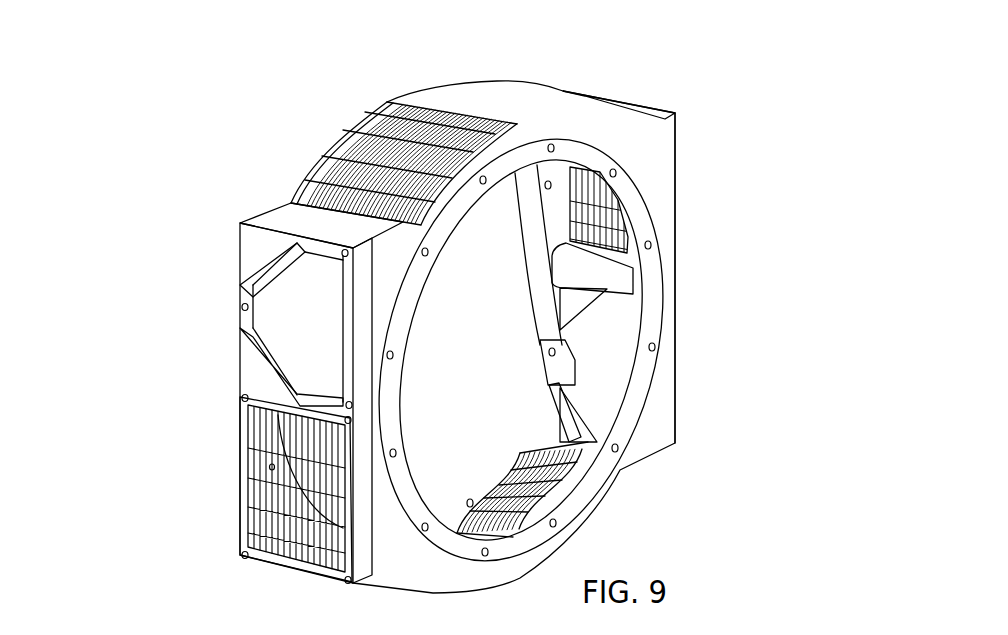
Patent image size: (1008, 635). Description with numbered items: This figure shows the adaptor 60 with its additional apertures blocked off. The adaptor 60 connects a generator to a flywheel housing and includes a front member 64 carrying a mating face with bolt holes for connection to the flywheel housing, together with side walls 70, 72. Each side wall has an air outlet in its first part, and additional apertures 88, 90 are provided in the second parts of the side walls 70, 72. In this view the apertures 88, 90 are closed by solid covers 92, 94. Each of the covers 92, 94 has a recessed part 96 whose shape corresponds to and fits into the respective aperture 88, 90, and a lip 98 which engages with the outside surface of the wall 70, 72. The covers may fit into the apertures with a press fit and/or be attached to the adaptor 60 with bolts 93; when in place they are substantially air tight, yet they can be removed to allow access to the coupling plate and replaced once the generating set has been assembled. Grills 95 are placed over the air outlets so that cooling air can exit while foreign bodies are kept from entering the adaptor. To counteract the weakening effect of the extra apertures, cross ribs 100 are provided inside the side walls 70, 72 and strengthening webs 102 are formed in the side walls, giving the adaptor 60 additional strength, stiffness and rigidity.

The adaptor 60 is at (724, 98).
The front member 64 is at (657, 167).
The side wall 70 is at (245, 352).
The side wall 72 is at (678, 298).
The aperture 88 is at (218, 297).
The aperture 90 is at (716, 379).
The solid cover 92 is at (293, 272).
The bolts 93 is at (348, 408).
The solid cover 94 is at (607, 325).
The grills 95 is at (370, 147).
The recessed part 96 is at (322, 288).
The lip 98 is at (345, 357).
The cross ribs 100 is at (597, 270).
The strengthening webs 102 is at (267, 240).